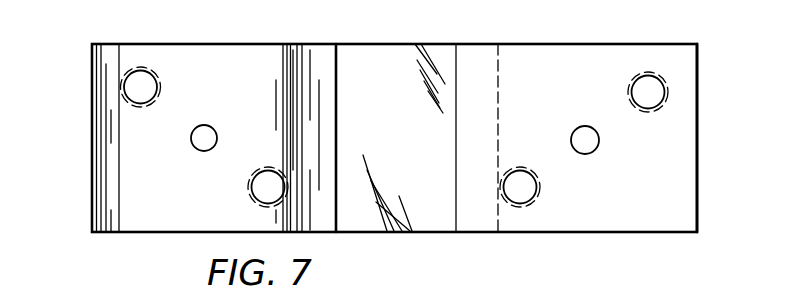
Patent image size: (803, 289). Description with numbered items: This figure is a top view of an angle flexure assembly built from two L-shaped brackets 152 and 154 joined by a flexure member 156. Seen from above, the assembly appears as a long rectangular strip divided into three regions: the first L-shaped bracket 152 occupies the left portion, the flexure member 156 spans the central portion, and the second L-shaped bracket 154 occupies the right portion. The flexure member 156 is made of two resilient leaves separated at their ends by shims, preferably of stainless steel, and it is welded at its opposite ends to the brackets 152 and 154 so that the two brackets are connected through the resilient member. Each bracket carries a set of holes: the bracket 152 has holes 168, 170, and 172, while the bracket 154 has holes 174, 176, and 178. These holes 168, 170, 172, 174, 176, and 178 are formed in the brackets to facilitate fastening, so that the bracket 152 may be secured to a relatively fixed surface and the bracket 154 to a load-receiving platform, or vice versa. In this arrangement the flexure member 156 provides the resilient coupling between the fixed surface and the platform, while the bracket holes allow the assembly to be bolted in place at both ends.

The L-shaped bracket 152 is at (125, 149).
The L-shaped bracket 154 is at (683, 103).
The flexure member 156 is at (408, 126).
The hole 168 is at (157, 87).
The hole 170 is at (213, 136).
The hole 172 is at (256, 185).
The hole 174 is at (532, 190).
The hole 176 is at (590, 145).
The hole 178 is at (634, 86).